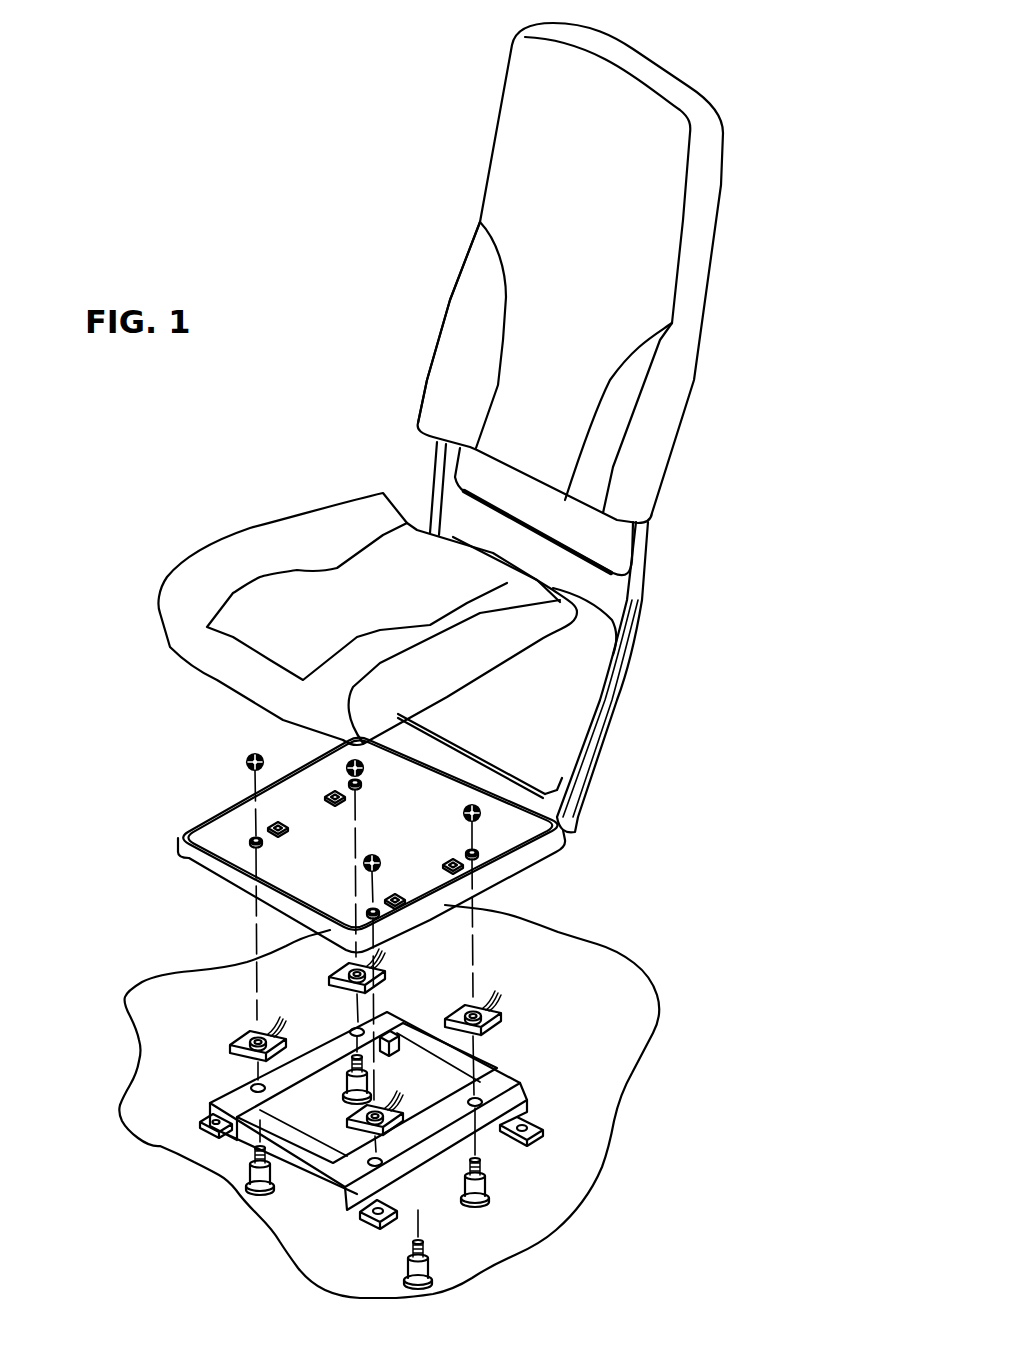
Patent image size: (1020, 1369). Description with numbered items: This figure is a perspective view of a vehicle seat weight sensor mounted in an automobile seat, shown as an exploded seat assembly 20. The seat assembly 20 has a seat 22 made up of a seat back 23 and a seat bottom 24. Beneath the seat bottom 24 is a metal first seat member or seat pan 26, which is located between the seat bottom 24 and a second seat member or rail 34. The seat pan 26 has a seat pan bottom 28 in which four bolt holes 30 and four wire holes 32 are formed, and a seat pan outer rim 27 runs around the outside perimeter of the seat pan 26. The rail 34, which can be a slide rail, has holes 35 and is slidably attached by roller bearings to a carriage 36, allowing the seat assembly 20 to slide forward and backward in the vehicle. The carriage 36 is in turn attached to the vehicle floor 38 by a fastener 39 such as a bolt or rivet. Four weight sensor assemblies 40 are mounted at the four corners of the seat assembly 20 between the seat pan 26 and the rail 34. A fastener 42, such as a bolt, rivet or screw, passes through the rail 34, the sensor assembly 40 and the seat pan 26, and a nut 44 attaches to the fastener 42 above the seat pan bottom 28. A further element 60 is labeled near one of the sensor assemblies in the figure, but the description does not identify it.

The seat assembly 20 is at (364, 164).
The seat 22 is at (445, 293).
The seat back 23 is at (726, 150).
The seat bottom 24 is at (290, 515).
The seat pan 26 is at (548, 856).
The seat pan outer rim 27 is at (178, 846).
The seat pan bottom 28 is at (434, 823).
The bolt holes 30 is at (250, 838).
The wire holes 32 is at (333, 793).
The rail 34 is at (395, 1198).
The holes 35 is at (508, 1083).
The carriage 36 is at (303, 1163).
The vehicle floor 38 is at (637, 1000).
The fastener 39 is at (520, 1129).
The weight sensor assemblies 40 is at (242, 1031).
The fastener 42 is at (490, 1200).
The nut 44 is at (247, 760).
The clip nut 60 is at (425, 1000).